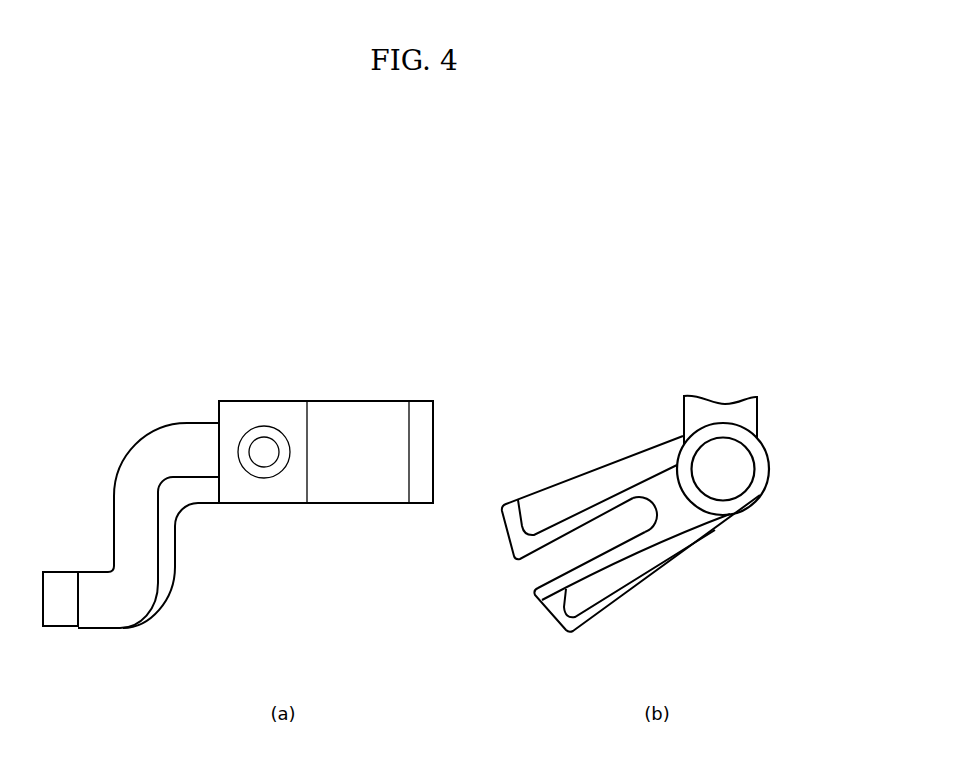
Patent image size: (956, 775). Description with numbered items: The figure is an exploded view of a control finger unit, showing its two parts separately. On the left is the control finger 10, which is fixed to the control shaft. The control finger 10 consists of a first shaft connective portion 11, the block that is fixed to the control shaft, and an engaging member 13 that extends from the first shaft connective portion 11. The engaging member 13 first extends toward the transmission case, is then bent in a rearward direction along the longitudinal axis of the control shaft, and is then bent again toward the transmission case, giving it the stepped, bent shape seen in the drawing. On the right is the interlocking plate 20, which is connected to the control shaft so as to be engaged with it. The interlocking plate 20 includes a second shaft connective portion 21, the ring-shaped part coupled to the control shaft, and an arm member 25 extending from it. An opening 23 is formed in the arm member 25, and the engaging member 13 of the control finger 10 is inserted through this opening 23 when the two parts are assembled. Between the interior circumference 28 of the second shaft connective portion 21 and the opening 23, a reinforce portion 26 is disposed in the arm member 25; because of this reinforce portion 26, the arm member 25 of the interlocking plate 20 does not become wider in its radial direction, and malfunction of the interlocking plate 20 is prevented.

The control finger 10 is at (170, 375).
The first shaft connective portion 11 is at (270, 410).
The engaging member 13 is at (146, 597).
The interlocking plate 20 is at (588, 375).
The second shaft connective portion 21 is at (766, 458).
The opening 23 is at (566, 555).
The arm member 25 is at (610, 483).
The reinforce portion 26 is at (668, 507).
The interior circumference 28 is at (716, 497).